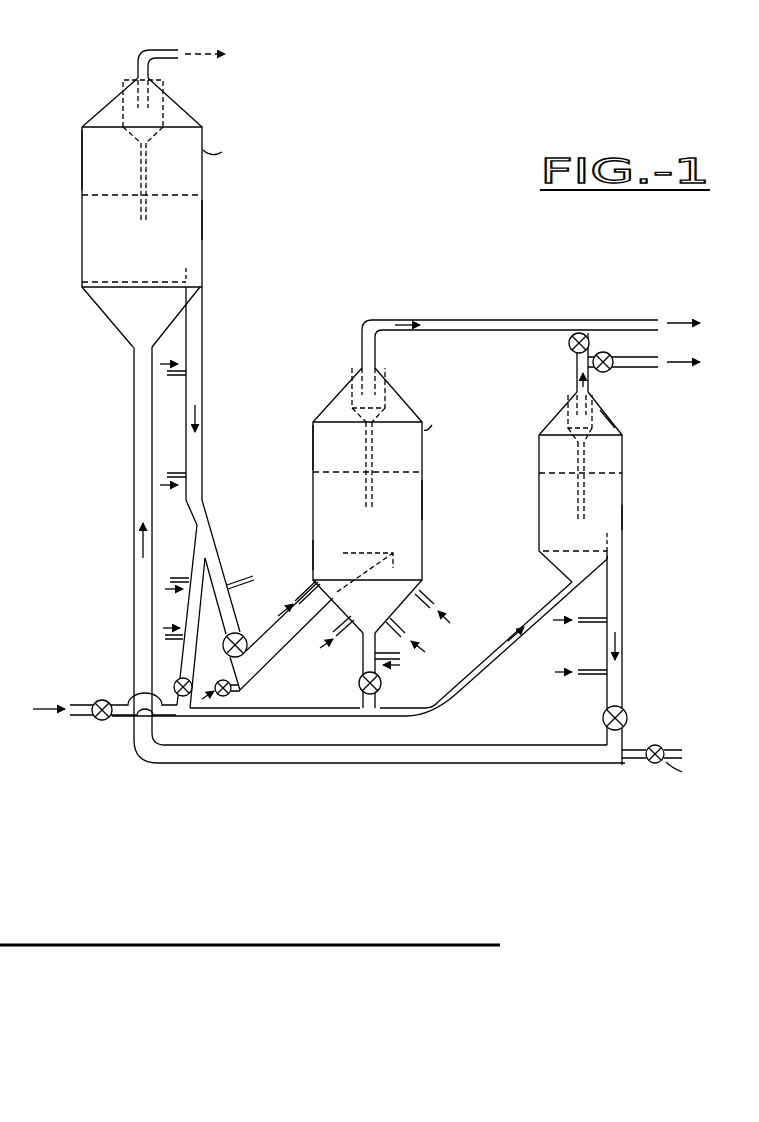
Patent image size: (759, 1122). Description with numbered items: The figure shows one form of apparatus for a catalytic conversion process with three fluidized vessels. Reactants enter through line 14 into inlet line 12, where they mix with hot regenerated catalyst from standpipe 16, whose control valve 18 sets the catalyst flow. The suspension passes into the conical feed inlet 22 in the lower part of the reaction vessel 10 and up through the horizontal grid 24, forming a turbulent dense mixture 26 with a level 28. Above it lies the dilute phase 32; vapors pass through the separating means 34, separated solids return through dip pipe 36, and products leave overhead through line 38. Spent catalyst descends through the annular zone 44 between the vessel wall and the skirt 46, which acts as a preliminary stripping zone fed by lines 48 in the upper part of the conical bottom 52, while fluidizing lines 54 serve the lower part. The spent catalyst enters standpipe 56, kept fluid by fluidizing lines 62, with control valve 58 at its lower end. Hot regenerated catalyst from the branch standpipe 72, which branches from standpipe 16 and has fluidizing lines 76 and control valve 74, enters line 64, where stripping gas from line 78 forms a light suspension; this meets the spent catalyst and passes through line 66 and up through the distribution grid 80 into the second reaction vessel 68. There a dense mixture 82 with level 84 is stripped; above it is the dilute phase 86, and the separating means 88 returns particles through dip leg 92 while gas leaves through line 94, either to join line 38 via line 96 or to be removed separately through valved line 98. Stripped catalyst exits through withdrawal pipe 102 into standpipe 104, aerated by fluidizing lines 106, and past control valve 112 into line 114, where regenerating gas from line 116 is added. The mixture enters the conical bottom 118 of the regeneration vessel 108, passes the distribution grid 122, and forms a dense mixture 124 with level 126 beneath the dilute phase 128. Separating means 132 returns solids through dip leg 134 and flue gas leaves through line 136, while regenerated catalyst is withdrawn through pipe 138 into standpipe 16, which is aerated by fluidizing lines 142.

The reaction vessel 10 is at (423, 440).
The inlet line 12 is at (262, 650).
The reactant line 14 is at (231, 690).
The standpipe 16 is at (219, 545).
The control valve 18 is at (240, 633).
The conical feed inlet 22 is at (366, 572).
The grid 24 is at (375, 550).
The dense mixture 26 is at (414, 500).
The level 28 is at (420, 472).
The dilute phase 32 is at (313, 440).
The separating means 34 is at (345, 395).
The dip pipe 36 is at (372, 455).
The overhead line 38 is at (412, 315).
The annular zone 44 is at (313, 554).
The skirt 46 is at (340, 563).
The stripping gas lines 48 is at (433, 598).
The conical bottom 52 is at (430, 615).
The fluidizing lines 54 is at (420, 633).
The standpipe 56 is at (364, 662).
The control valve 58 is at (381, 684).
The fluidizing lines 62 is at (400, 656).
The line 64 is at (312, 717).
The line 66 is at (405, 717).
The second reaction vessel 68 is at (622, 490).
The branch standpipe 72 is at (188, 622).
The control valve 74 is at (182, 678).
The fluidizing lines 76 is at (178, 578).
The stripping gas line 78 is at (118, 688).
The distribution grid 80 is at (555, 563).
The dense mixture 82 is at (624, 517).
The level 84 is at (622, 470).
The dilute phase 86 is at (620, 430).
The separating means 88 is at (596, 410).
The dip leg 92 is at (578, 458).
The overhead line 94 is at (577, 380).
The line 96 is at (569, 343).
The valved line 98 is at (612, 355).
The withdrawal pipe 102 is at (625, 545).
The standpipe 104 is at (625, 583).
The fluidizing lines 106 is at (596, 638).
The regeneration vessel 108 is at (82, 218).
The control valve 112 is at (627, 713).
The line 114 is at (531, 731).
The regenerating gas line 116 is at (665, 749).
The conical bottom 118 is at (122, 335).
The distribution grid 122 is at (100, 297).
The dense mixture 124 is at (190, 218).
The level 126 is at (190, 195).
The dilute phase 128 is at (82, 153).
The separating means 132 is at (170, 105).
The dip leg 134 is at (142, 160).
The regeneration gas line 136 is at (155, 45).
The withdrawal pipe 138 is at (190, 268).
The fluidizing lines 142 is at (183, 474).